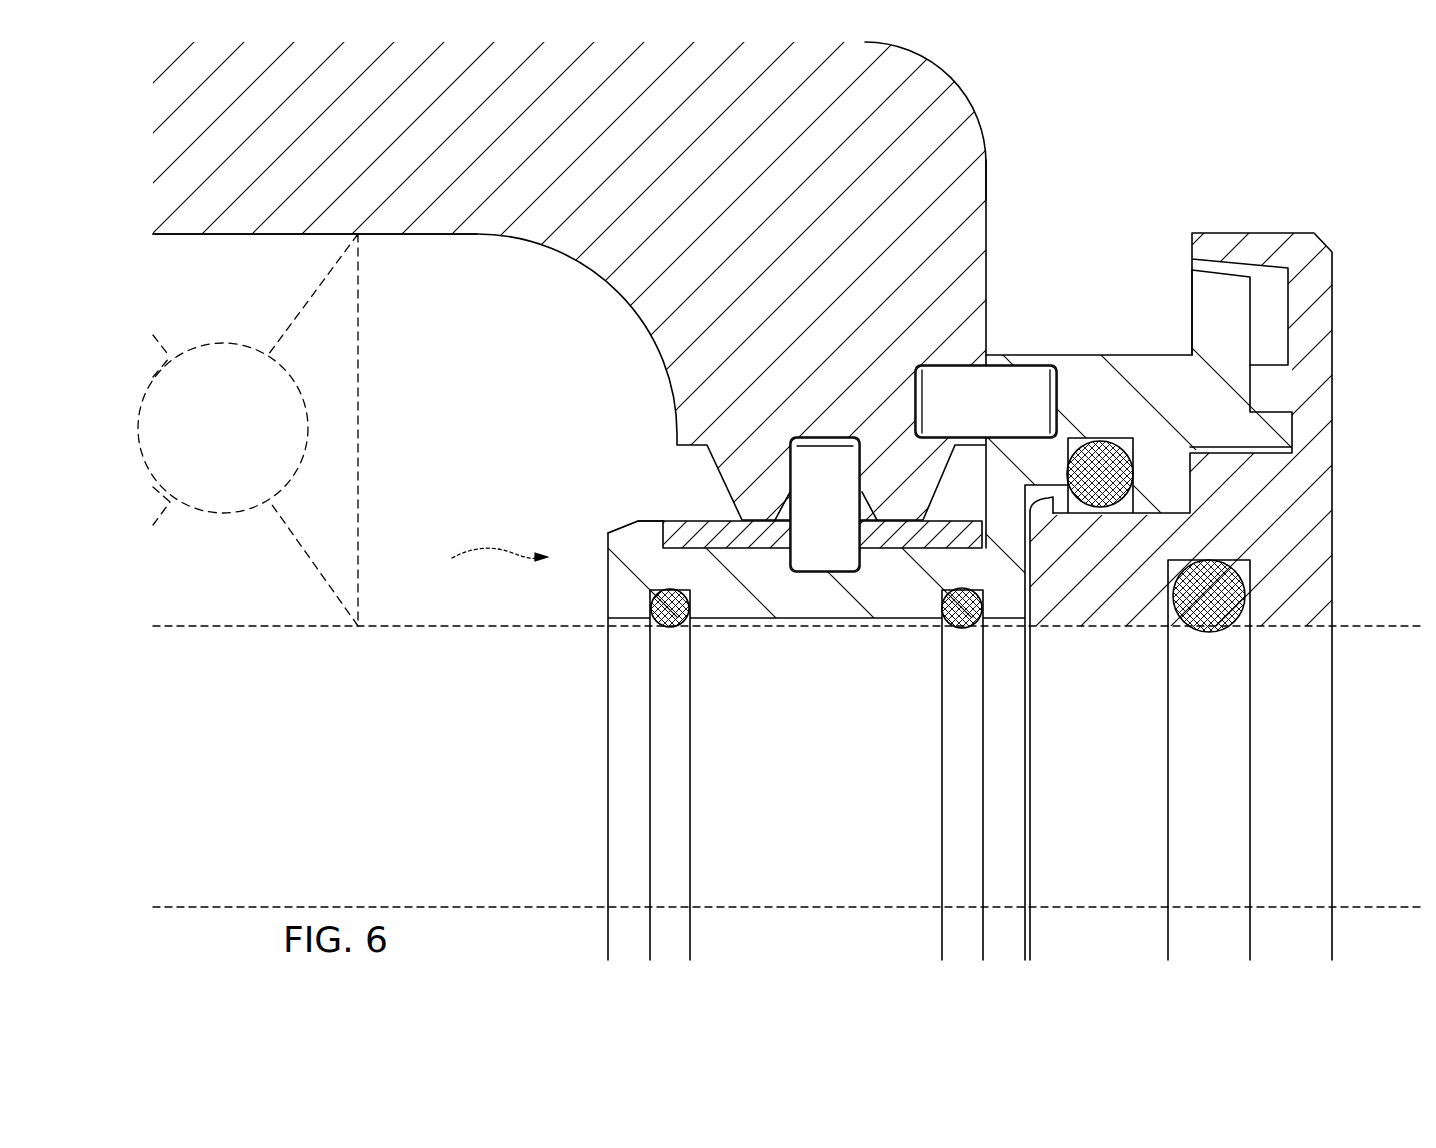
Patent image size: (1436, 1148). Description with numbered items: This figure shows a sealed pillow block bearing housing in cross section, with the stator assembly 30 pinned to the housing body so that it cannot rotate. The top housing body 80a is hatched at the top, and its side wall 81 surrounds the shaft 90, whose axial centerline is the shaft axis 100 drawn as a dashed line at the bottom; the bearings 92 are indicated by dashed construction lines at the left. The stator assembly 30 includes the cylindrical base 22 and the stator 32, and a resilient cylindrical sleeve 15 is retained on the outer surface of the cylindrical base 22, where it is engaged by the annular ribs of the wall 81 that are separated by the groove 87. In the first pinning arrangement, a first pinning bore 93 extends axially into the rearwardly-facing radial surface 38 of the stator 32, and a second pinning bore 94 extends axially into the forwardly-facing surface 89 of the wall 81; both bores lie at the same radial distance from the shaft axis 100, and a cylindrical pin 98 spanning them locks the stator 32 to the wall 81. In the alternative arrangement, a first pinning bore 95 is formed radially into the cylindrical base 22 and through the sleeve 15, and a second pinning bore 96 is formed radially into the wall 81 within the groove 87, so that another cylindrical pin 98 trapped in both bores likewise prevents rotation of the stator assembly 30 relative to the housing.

The top housing body 80a is at (372, 145).
The side wall 81 is at (737, 270).
The radial surface 38 is at (983, 292).
The forwardly-facing surface 89 is at (987, 186).
The cylindrical pin 98 is at (1008, 393).
The first pinning bore 93 is at (1057, 383).
The stator 32 is at (1220, 405).
The second pinning bore 94 is at (910, 393).
The second pinning bore 96 is at (815, 432).
The groove 87 is at (772, 515).
The bearings 92 is at (218, 436).
The stator assembly 30 is at (481, 573).
The resilient cylindrical sleeve 15 is at (700, 535).
The first pinning bore 95 is at (808, 572).
The cylindrical base 22 is at (907, 583).
The shaft 90 is at (232, 775).
The shaft axis 100 is at (1352, 905).